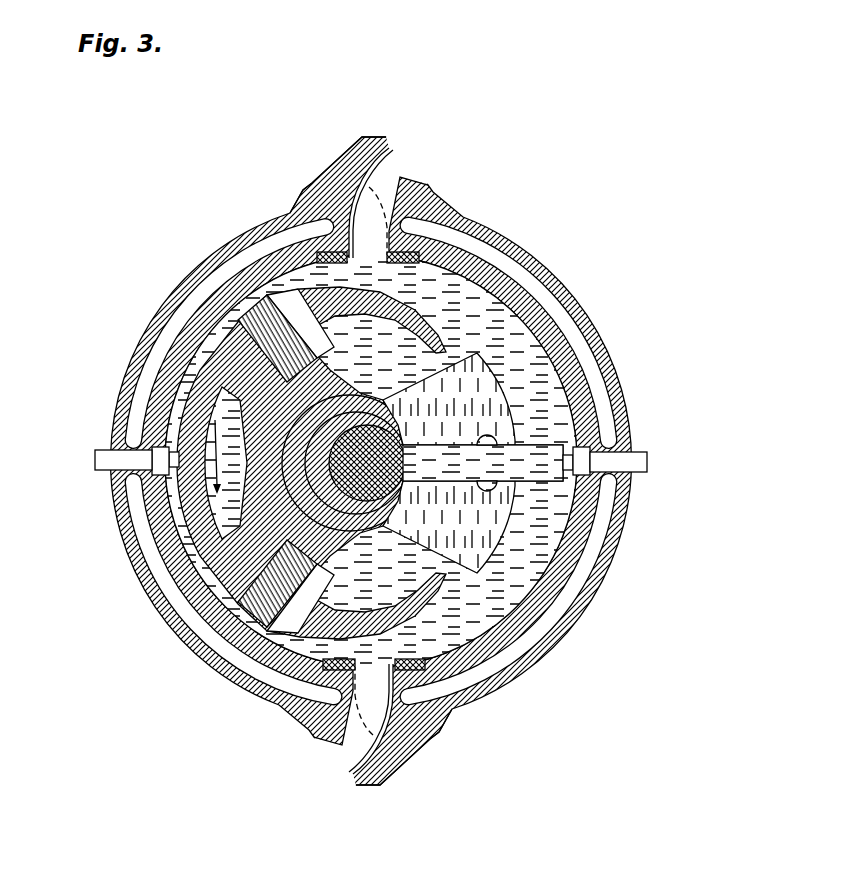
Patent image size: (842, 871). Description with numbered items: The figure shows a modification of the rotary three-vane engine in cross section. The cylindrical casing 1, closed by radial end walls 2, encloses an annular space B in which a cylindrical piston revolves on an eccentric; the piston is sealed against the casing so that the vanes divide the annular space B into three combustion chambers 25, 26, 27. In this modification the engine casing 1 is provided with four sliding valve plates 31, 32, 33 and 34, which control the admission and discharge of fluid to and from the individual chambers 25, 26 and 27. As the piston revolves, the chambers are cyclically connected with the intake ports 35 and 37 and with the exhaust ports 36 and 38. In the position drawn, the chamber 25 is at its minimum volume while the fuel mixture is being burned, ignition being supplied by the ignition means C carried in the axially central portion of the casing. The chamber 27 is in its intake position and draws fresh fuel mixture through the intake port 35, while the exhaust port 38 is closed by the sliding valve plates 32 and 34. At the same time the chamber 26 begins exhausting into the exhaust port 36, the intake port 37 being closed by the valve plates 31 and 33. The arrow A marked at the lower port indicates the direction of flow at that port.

The casing 1 is at (240, 287).
The radial end wall 2 is at (539, 526).
The combustion chamber 25 is at (203, 590).
The combustion chamber 26 is at (529, 388).
The combustion chamber 27 is at (525, 573).
The sliding valve plate 31 is at (444, 258).
The sliding valve plate 32 is at (452, 688).
The sliding valve plate 33 is at (397, 226).
The sliding valve plate 34 is at (336, 701).
The intake port 35 is at (373, 760).
The exhaust port 36 is at (397, 203).
The intake port 37 is at (338, 175).
The exhaust port 38 is at (380, 736).
The inlet flow direction A is at (386, 796).
The annular space B is at (484, 616).
The ignition means C is at (96, 494).